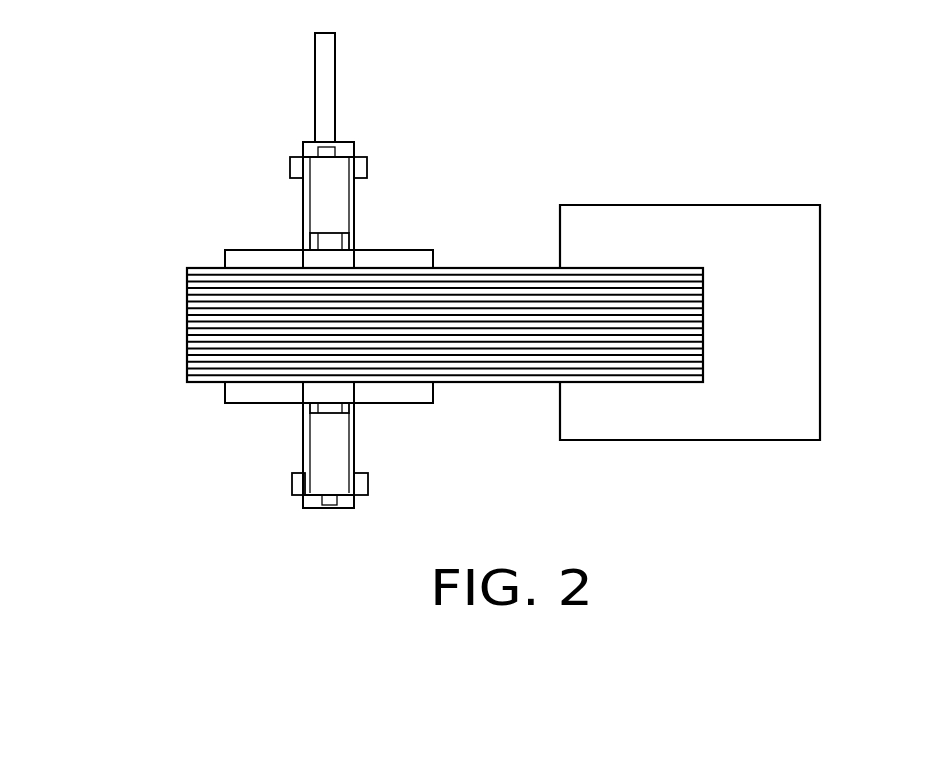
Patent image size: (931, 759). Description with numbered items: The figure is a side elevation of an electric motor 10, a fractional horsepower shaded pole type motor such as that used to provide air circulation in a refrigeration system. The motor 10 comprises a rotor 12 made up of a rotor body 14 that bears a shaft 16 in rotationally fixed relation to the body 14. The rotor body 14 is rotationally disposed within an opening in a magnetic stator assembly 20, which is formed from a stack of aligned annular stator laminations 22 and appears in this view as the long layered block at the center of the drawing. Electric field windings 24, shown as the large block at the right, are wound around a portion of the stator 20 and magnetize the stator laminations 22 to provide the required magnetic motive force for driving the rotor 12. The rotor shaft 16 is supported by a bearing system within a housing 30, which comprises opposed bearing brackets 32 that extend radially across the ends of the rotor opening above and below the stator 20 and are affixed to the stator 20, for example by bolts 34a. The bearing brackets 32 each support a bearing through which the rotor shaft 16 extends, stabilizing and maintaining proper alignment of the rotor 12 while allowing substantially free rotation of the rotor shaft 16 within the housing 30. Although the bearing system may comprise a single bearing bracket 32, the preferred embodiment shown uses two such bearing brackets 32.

The electric motor 10 is at (506, 106).
The rotor 12 is at (247, 249).
The rotor body 14 is at (257, 404).
The shaft 16 is at (335, 53).
The magnetic stator assembly 20 is at (396, 325).
The stator laminations 22 is at (190, 288).
The electric field windings 24 is at (740, 417).
The housing 30 is at (288, 504).
The bearing brackets 32 is at (360, 153).
The bolts 34a is at (352, 230).